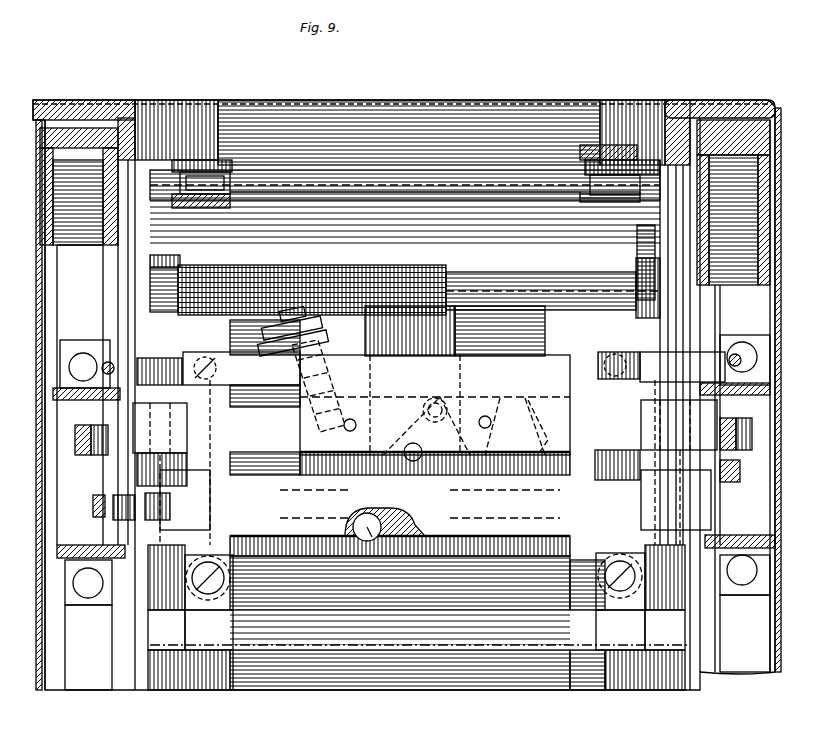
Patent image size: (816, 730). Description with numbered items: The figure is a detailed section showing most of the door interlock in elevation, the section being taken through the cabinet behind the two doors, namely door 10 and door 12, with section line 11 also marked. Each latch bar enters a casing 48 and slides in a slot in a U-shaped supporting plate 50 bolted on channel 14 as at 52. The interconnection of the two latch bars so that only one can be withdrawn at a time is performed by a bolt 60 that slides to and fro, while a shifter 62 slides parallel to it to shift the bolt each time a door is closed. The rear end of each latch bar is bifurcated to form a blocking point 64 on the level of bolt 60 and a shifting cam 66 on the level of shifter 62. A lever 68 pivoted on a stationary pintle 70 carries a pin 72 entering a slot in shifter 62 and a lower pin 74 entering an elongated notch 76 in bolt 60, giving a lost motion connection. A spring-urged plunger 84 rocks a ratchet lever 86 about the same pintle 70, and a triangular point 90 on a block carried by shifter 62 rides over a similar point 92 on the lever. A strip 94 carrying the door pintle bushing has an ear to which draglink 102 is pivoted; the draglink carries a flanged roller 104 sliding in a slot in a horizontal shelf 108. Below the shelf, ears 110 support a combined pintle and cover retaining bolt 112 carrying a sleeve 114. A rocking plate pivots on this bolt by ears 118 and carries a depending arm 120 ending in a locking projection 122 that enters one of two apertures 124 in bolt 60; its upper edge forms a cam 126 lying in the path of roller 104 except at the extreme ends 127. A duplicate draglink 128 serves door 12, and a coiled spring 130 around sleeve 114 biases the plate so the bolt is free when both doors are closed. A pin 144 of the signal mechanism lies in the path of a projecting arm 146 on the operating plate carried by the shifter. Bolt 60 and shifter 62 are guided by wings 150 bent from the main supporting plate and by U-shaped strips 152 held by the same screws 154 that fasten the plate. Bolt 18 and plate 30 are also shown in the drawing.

The door 10 is at (33, 420).
The section line 11 is at (505, 70).
The door 12 is at (180, 80).
The channel 14 is at (700, 118).
The bolt 18 is at (330, 330).
The plate 30 is at (275, 342).
The casing 48 is at (700, 300).
The U-shaped supporting plate 50 is at (740, 540).
The bolt 52 is at (752, 592).
The bolt 60 is at (525, 538).
The shifter 62 is at (262, 465).
The blocking point 64 is at (732, 484).
The shifting cam 66 is at (88, 428).
The lever 68 is at (395, 545).
The pintle 70 is at (410, 445).
The pin 72 is at (435, 398).
The pin 74 is at (365, 541).
The notch 76 is at (428, 548).
The plunger 84 is at (258, 391).
The ratchet lever 86 is at (487, 416).
The triangular point 90 is at (560, 478).
The point 92 is at (540, 435).
The strip 94 is at (728, 118).
The draglink 102 is at (230, 180).
The flanged roller 104 is at (230, 190).
The horizontal shelf 108 is at (335, 172).
The ears 110 is at (190, 268).
The combined pintle and cover retaining bolt 112 is at (646, 228).
The sleeve 114 is at (505, 278).
The ears 118 is at (165, 266).
The depending arm 120 is at (165, 353).
The locking projection 122 is at (170, 510).
The apertures 124 is at (140, 520).
The cam 126 is at (386, 186).
The extreme ends 127 is at (232, 178).
The draglink 128 is at (600, 158).
The coiled spring 130 is at (410, 268).
The pin 144 is at (106, 362).
The projecting arm 146 is at (705, 352).
The wings 150 is at (185, 457).
The U-shaped strips 152 is at (600, 348).
The screws 154 is at (605, 576).